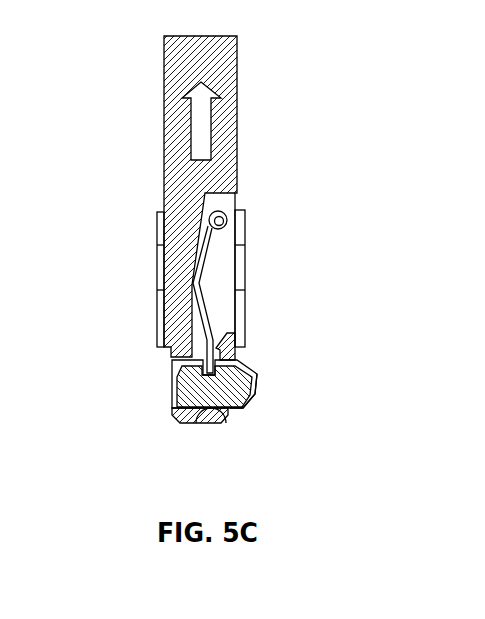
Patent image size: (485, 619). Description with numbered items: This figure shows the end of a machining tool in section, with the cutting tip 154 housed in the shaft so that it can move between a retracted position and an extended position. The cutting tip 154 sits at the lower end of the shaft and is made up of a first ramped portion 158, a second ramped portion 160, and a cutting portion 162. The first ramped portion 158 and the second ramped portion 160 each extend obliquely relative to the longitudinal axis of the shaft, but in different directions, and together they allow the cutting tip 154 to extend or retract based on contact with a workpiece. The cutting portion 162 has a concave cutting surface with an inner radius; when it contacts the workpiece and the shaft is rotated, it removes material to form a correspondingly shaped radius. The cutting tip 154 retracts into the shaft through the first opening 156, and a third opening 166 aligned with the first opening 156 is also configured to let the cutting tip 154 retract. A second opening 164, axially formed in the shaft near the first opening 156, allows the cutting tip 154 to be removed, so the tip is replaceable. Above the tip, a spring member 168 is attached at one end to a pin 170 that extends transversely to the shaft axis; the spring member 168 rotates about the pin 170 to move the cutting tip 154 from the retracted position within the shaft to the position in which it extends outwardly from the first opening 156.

The cutting tip 154 is at (188, 425).
The first opening 156 is at (260, 421).
The first ramped portion 158 is at (252, 398).
The second ramped portion 160 is at (258, 374).
The cutting portion 162 is at (245, 360).
The second opening 164 is at (240, 307).
The third opening 166 is at (173, 388).
The spring member 168 is at (203, 296).
The pin 170 is at (224, 224).